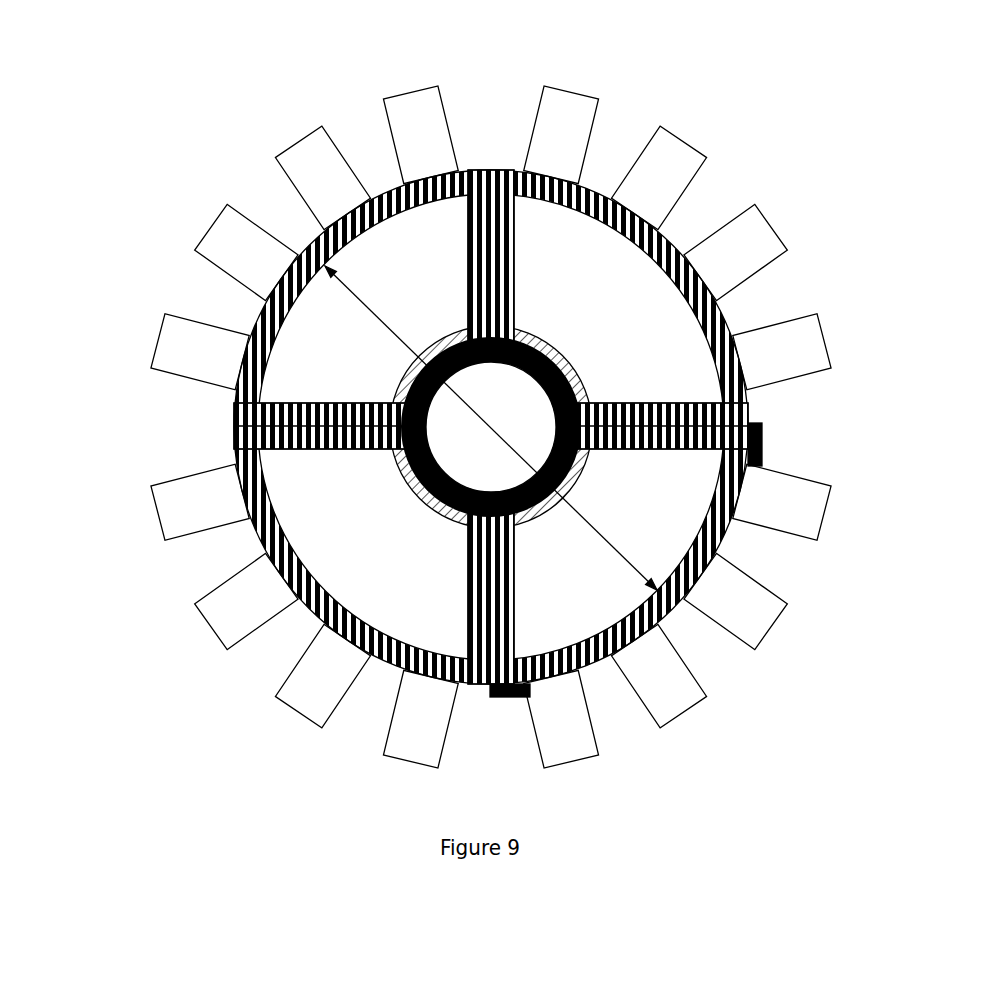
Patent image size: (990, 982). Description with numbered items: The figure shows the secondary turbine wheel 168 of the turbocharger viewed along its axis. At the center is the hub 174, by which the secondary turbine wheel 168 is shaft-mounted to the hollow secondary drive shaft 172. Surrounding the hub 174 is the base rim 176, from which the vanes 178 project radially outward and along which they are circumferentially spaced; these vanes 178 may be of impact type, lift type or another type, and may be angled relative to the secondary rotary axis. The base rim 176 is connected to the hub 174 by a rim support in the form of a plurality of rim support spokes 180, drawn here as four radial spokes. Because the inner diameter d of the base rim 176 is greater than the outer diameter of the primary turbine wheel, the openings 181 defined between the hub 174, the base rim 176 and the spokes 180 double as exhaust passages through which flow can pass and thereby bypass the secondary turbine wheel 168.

The secondary turbine wheel 168 is at (523, 432).
The hollow secondary drive shaft 172 is at (587, 380).
The hub 174 is at (550, 343).
The base rim 176 is at (678, 623).
The vanes 178 is at (807, 507).
The rim support spokes 180 is at (337, 450).
The openings 181 is at (565, 232).